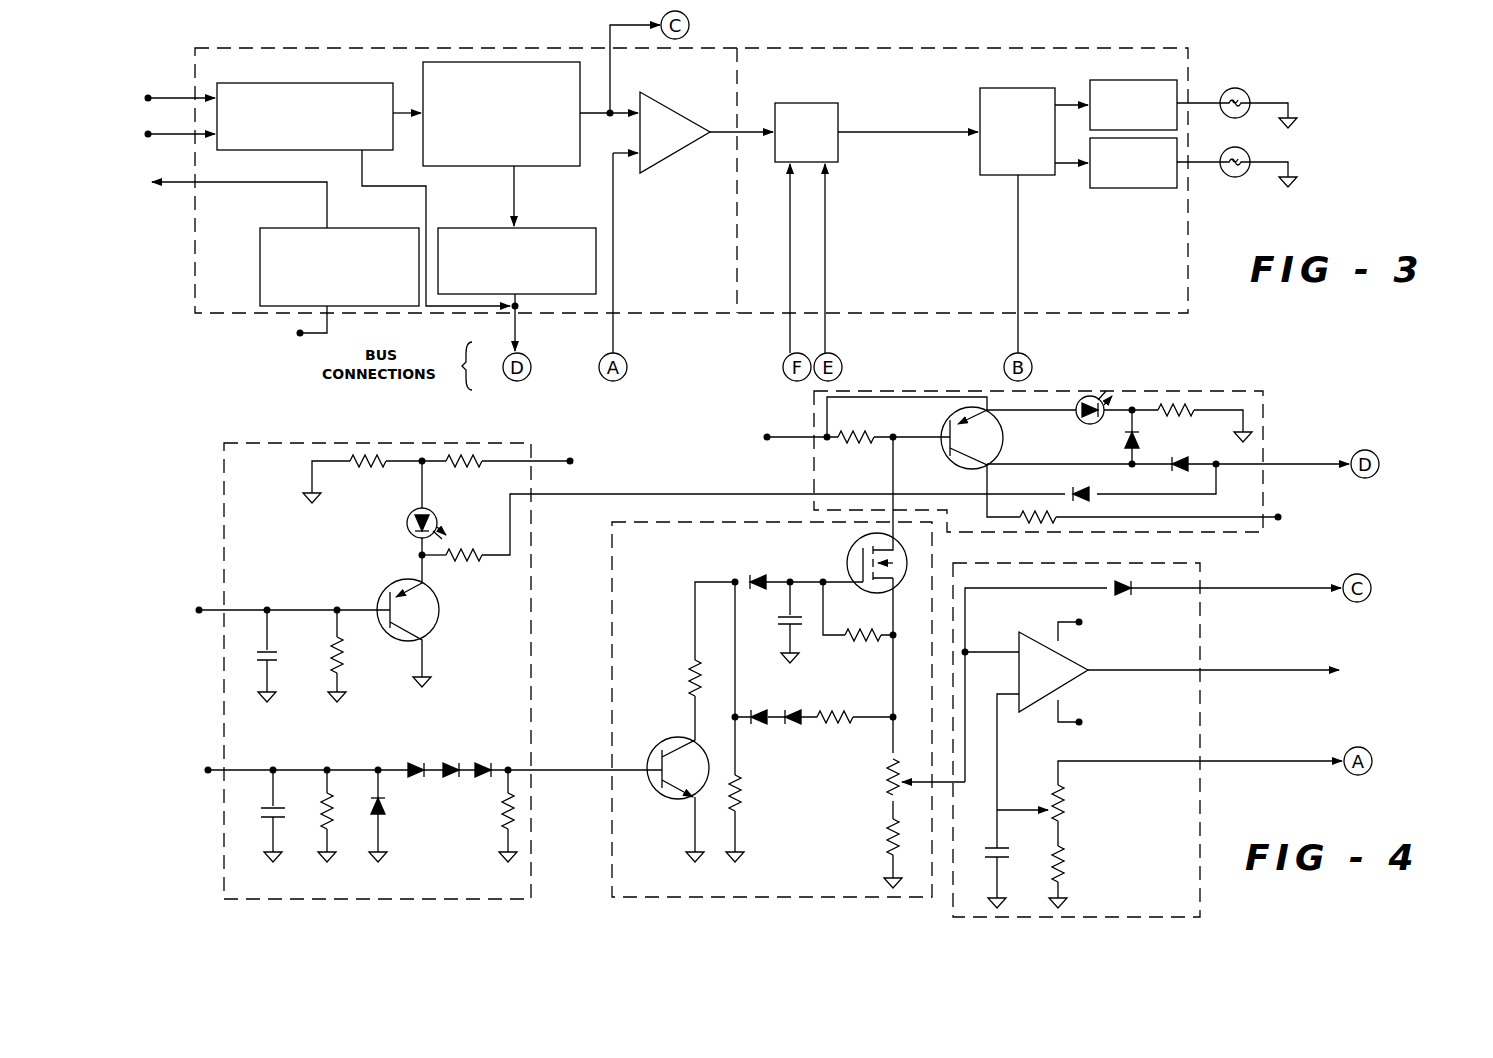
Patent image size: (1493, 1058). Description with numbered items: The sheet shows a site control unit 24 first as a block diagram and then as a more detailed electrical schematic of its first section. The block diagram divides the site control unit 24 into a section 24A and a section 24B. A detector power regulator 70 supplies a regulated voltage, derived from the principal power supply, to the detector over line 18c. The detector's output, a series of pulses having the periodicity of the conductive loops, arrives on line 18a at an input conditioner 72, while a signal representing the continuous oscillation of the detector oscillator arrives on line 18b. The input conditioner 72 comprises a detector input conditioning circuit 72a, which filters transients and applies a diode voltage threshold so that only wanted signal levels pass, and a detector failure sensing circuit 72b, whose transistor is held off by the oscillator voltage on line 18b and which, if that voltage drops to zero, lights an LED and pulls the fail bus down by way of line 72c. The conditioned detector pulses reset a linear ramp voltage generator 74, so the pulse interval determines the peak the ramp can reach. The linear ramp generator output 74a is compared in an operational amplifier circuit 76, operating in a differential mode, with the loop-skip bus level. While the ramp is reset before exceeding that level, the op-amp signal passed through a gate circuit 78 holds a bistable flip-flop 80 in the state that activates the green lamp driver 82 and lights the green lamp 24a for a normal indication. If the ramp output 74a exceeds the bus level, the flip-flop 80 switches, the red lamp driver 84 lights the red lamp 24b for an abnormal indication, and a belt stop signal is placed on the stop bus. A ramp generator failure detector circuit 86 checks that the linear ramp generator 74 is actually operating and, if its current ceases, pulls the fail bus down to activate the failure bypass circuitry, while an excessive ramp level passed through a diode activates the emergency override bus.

In FIG. 3, the site control unit 24 is at (153, 48).
In FIG. 3, the 24A section 24A is at (382, 46).
In FIG. 3, the 24B section 24B is at (1017, 44).
In FIG. 3, the line 18a is at (156, 98).
In FIG. 4, the line 18a is at (409, 771).
In FIG. 3, the line 18b is at (156, 134).
In FIG. 4, the line 18b is at (268, 611).
In FIG. 3, the line 18c is at (212, 199).
In FIG. 3, the input conditioner 72 is at (255, 82).
In FIG. 4, the input conditioner 72 is at (222, 442).
In FIG. 4, the detector input conditioning circuit 72a is at (221, 744).
In FIG. 4, the detector failure sensing circuit 72b is at (222, 520).
In FIG. 3, the line 72c is at (426, 226).
In FIG. 3, the linear ramp voltage generator 74 is at (523, 61).
In FIG. 4, the linear ramp voltage generator 74 is at (610, 613).
In FIG. 3, the linear ramp generator output 74a is at (626, 114).
In FIG. 3, the operational amplifier circuit 76 is at (666, 109).
In FIG. 4, the operational amplifier circuit 76 is at (1199, 657).
In FIG. 3, the gate circuit 78 is at (837, 105).
In FIG. 3, the bistable flip-flop 80 is at (980, 103).
In FIG. 3, the green lamp driver 82 is at (1101, 80).
In FIG. 3, the red lamp driver 84 is at (1109, 188).
In FIG. 3, the ramp generator failure detector circuit 86 is at (546, 228).
In FIG. 4, the ramp generator failure detector circuit 86 is at (809, 413).
In FIG. 3, the detector power regulator 70 is at (366, 228).
In FIG. 3, the green lamp 24a is at (1242, 90).
In FIG. 3, the red lamp 24b is at (1240, 176).